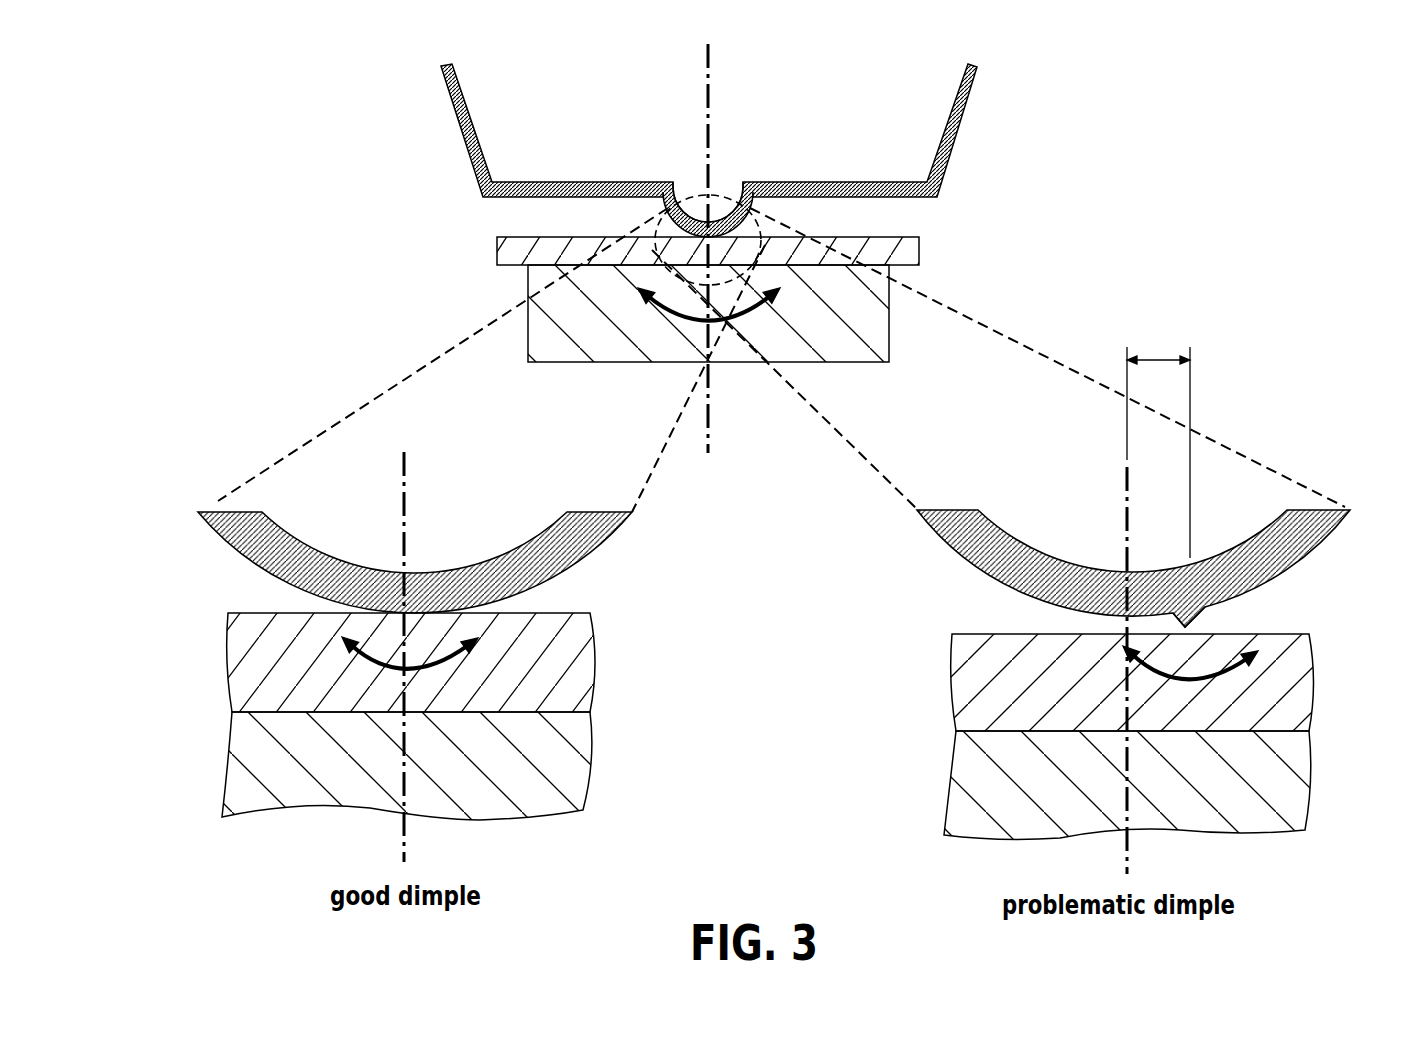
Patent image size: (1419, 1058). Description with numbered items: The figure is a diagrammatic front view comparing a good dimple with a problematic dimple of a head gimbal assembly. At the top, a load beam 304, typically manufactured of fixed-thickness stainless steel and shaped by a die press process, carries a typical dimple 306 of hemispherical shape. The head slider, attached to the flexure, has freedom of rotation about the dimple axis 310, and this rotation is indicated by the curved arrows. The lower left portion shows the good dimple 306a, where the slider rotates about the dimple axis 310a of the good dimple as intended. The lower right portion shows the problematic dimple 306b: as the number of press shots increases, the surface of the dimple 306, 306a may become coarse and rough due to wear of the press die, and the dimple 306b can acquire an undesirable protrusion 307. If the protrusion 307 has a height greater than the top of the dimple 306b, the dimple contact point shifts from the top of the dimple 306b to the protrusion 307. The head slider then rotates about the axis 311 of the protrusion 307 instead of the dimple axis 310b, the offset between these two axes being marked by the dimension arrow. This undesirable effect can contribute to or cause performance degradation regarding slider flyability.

The load beam 304 is at (458, 120).
The dimple 306 is at (665, 213).
The good dimple 306a is at (240, 558).
The problematic dimple 306b is at (1300, 542).
The protrusion 307 is at (1205, 607).
The dimple axis 310 is at (710, 112).
The dimple axis of the good dimple 310a is at (409, 522).
The dimple axis of the problematic dimple 310b is at (1125, 535).
The axis of the protrusion 311 is at (1193, 383).